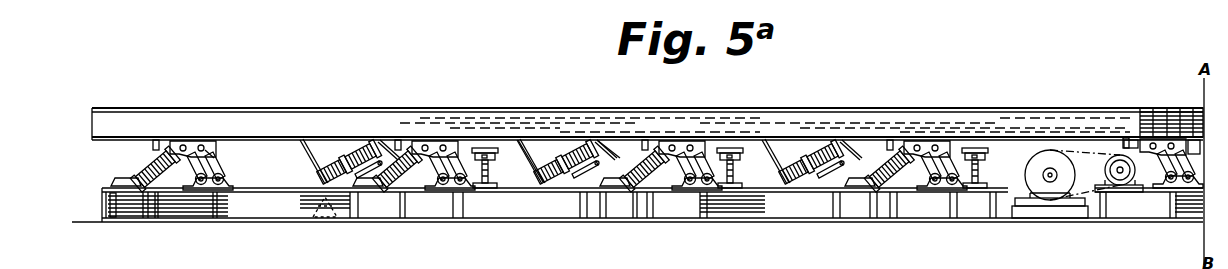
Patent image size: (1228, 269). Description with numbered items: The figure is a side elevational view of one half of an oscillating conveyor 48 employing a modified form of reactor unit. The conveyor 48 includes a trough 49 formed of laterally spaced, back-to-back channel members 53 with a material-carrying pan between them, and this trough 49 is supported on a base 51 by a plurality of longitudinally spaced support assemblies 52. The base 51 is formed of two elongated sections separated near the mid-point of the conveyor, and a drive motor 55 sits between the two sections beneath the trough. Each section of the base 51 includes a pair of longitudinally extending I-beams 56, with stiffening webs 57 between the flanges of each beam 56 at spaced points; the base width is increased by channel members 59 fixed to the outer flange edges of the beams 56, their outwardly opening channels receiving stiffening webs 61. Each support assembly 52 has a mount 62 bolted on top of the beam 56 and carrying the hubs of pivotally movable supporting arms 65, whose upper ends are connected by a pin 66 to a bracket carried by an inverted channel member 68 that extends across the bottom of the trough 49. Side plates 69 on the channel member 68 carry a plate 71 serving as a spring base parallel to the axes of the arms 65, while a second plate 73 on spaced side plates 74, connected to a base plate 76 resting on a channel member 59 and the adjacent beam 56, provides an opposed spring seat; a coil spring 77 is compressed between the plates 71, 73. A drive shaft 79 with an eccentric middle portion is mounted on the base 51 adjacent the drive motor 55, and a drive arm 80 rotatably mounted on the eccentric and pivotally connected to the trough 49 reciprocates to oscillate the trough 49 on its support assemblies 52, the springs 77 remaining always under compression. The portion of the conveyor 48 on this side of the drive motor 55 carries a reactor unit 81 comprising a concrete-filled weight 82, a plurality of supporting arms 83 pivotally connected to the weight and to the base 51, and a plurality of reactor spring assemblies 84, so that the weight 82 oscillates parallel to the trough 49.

The oscillating conveyor 48 is at (779, 107).
The trough 49 is at (466, 124).
The base 51 is at (523, 220).
The support assembly 52 is at (166, 156).
The channel member 53 is at (318, 118).
The drive motor 55 is at (1030, 168).
The I-beam 56 is at (802, 207).
The stiffening web 57 is at (220, 196).
The channel member 59 is at (143, 208).
The stiffening web 61 is at (138, 200).
The mount 62 is at (203, 186).
The supporting arm 65 is at (212, 164).
The pin 66 is at (198, 146).
The inverted channel member 68 is at (210, 155).
The side plate 69 is at (203, 144).
The plate 71 is at (176, 162).
The second plate 73 is at (142, 172).
The side plate 74 is at (120, 183).
The base plate 76 is at (118, 197).
The coil spring 77 is at (162, 160).
The drive shaft 79 is at (1118, 182).
The drive arm 80 is at (1140, 144).
The reactor unit 81 is at (567, 182).
The weight 82 is at (633, 155).
The supporting arm 83 is at (312, 198).
The reactor spring assembly 84 is at (350, 150).